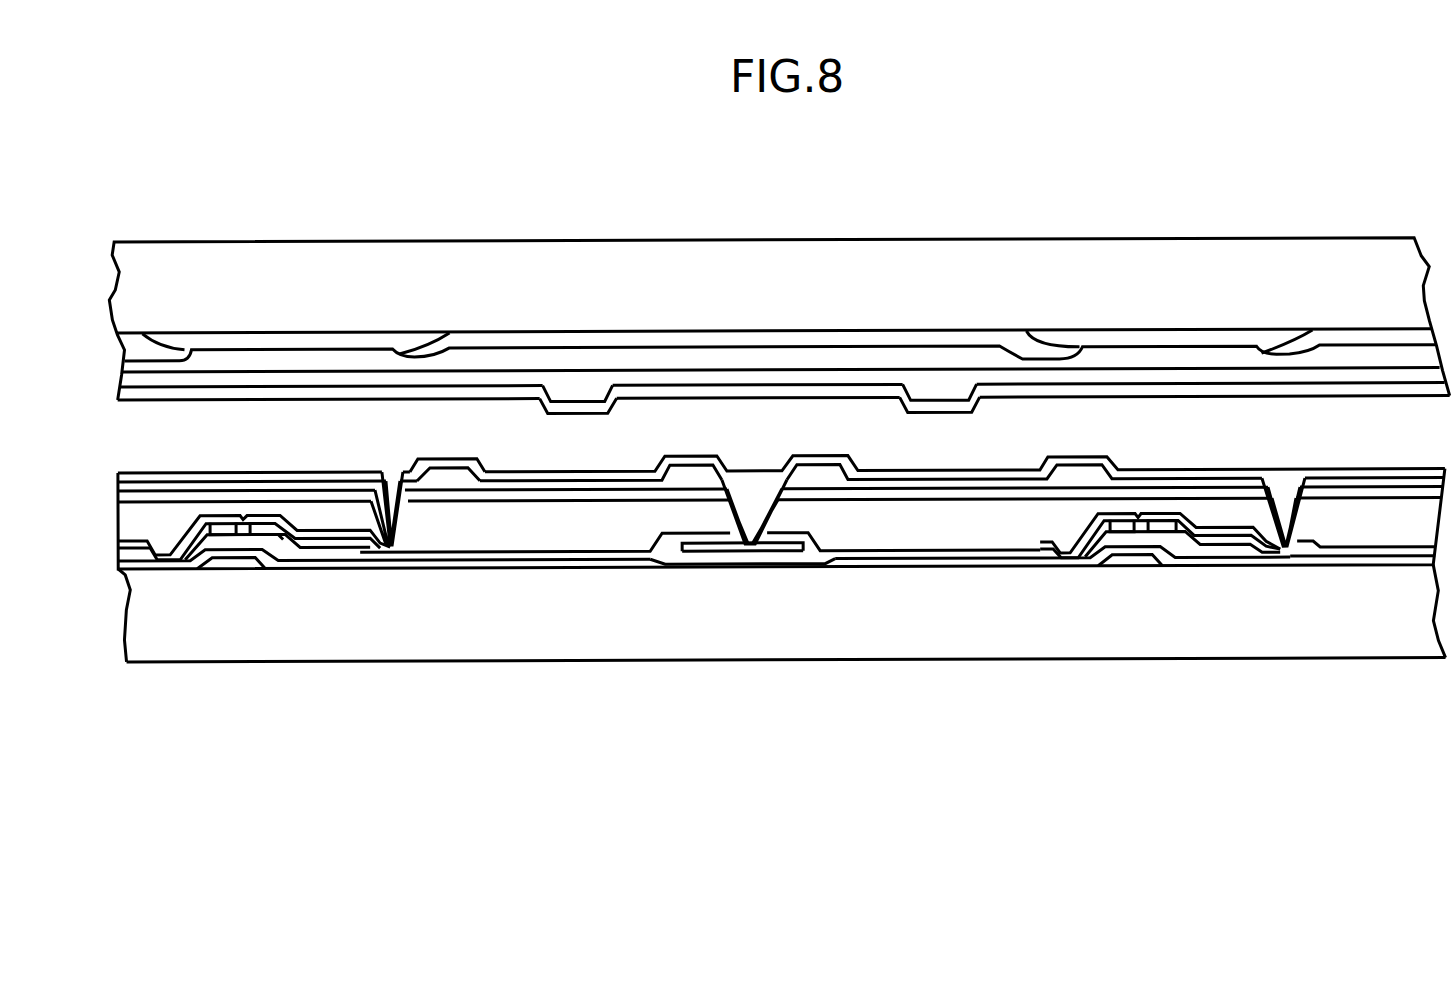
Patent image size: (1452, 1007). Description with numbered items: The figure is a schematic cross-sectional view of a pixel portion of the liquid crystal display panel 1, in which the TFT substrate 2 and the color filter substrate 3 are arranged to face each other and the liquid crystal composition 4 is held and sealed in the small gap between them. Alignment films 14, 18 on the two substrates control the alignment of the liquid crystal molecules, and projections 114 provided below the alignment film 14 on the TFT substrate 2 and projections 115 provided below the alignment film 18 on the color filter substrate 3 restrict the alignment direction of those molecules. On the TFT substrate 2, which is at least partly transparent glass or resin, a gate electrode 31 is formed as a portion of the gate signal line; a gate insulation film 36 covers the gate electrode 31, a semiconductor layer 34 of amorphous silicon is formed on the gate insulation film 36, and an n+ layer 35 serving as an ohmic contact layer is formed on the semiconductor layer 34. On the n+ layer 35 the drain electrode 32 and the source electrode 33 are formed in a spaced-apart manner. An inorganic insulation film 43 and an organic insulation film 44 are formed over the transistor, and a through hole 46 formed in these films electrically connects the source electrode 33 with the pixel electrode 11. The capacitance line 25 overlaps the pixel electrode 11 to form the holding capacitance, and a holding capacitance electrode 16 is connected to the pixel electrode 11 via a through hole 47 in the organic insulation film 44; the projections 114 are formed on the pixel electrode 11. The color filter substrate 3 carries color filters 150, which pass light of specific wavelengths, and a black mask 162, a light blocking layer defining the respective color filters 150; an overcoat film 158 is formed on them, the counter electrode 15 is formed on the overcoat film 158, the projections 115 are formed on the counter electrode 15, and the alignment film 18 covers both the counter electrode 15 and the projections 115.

The liquid crystal display panel 1 is at (618, 803).
The TFT substrate 2 is at (782, 614).
The color filter substrate 3 is at (779, 281).
The liquid crystal composition 4 is at (781, 318).
The pixel electrode 11 is at (780, 622).
The alignment film 14 is at (781, 610).
The counter electrode 15 is at (618, 287).
The holding capacitance electrode 16 is at (742, 650).
The alignment film 18 is at (784, 283).
The capacitance line 25 is at (748, 655).
The gate electrode 31 is at (677, 668).
The drain electrode 32 is at (698, 620).
The source electrode 33 is at (703, 637).
The semiconductor layer 34 is at (732, 635).
The n+ layer 35 is at (679, 650).
The gate insulation film 36 is at (678, 633).
The inorganic insulation film 43 is at (897, 625).
The organic insulation film 44 is at (780, 630).
The through hole 46 is at (260, 644).
The through hole 47 is at (753, 633).
The projections 114 is at (443, 627).
The projections 115 is at (961, 288).
The color filters 150 is at (779, 263).
The overcoat film 158 is at (781, 275).
The black mask 162 is at (727, 262).